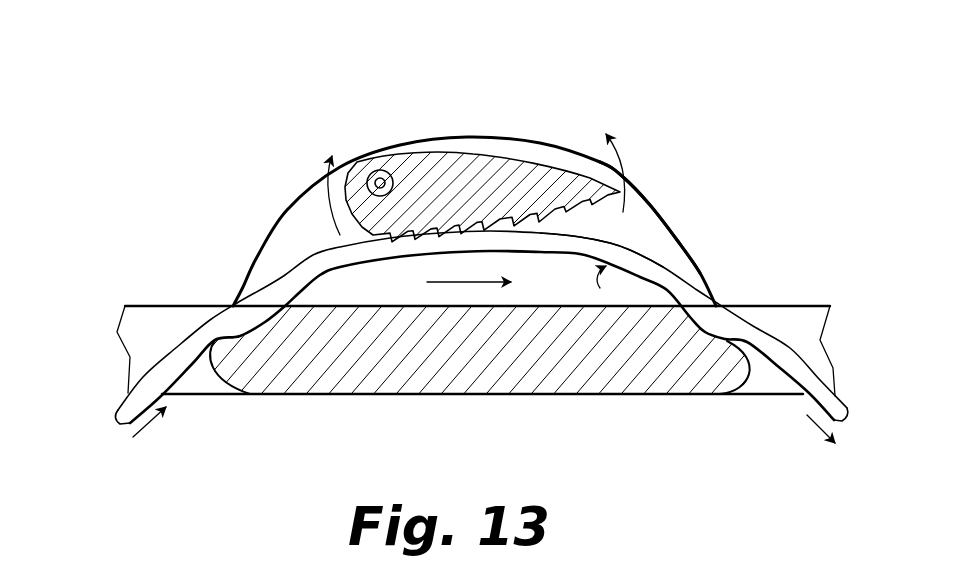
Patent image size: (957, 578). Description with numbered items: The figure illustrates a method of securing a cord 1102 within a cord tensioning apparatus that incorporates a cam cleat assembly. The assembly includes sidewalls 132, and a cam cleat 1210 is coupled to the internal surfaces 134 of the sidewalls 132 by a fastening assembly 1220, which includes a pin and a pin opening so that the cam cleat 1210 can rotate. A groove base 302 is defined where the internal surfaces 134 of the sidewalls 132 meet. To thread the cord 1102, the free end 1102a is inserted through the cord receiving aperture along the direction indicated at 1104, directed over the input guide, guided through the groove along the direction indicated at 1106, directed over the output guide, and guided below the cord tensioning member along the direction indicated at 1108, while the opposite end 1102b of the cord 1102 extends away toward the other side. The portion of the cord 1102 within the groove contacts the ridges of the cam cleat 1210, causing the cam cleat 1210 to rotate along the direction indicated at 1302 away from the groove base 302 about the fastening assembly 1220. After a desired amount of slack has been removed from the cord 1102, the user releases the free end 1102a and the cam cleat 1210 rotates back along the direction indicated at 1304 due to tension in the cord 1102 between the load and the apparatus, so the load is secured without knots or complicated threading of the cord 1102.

The cam cleat 1210 is at (464, 133).
The fastening assembly 1220 is at (368, 160).
The direction of cam cleat rotation 1302 is at (630, 170).
The direction of cam cleat rotation 1304 is at (327, 210).
The sidewalls 132 is at (648, 223).
The internal surfaces 134 is at (618, 260).
The groove base 302 is at (600, 288).
The cord 1102 is at (118, 406).
The free end 1102a is at (850, 425).
The second end of strip 1102b is at (117, 423).
The direction of cord insertion 1104 is at (161, 433).
The direction of cord guidance through the groove 1106 is at (466, 285).
The direction of cord guidance below the tensioning member 1108 is at (801, 432).